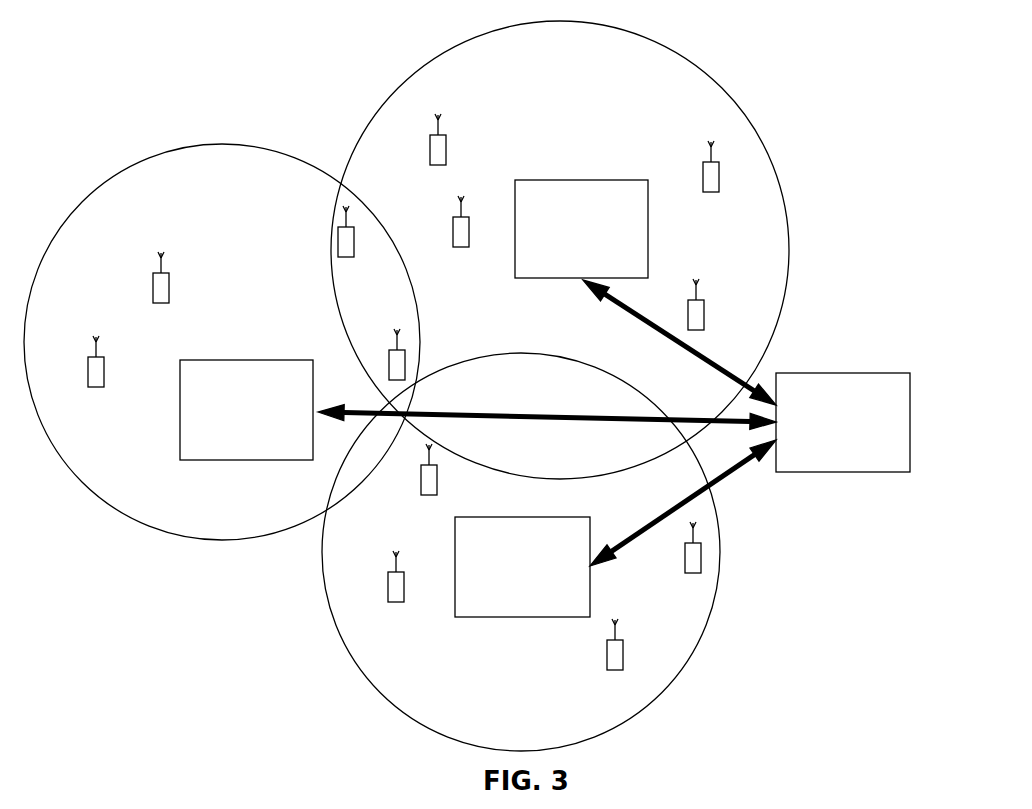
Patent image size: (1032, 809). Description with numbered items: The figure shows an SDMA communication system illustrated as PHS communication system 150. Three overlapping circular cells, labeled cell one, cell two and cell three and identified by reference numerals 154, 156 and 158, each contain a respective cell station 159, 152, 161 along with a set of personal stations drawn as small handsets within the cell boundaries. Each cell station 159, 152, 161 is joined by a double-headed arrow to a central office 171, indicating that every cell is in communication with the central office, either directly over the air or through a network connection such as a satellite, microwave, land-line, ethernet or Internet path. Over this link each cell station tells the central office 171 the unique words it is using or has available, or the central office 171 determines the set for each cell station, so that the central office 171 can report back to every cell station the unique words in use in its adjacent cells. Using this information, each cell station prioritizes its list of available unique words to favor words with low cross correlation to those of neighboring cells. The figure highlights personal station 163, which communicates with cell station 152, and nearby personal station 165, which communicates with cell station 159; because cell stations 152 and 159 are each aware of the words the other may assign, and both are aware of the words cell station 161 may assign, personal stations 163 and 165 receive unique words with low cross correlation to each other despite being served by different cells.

The PHS communication system 150 is at (179, 53).
The cell 1 154 is at (733, 100).
The cell 2 156 is at (162, 152).
The cell 3 158 is at (722, 548).
The cell station 159 is at (583, 180).
The cell station 152 is at (247, 360).
The cell station 161 is at (592, 568).
The central office 171 is at (810, 373).
The personal station 163 is at (355, 240).
The personal station 165 is at (405, 365).